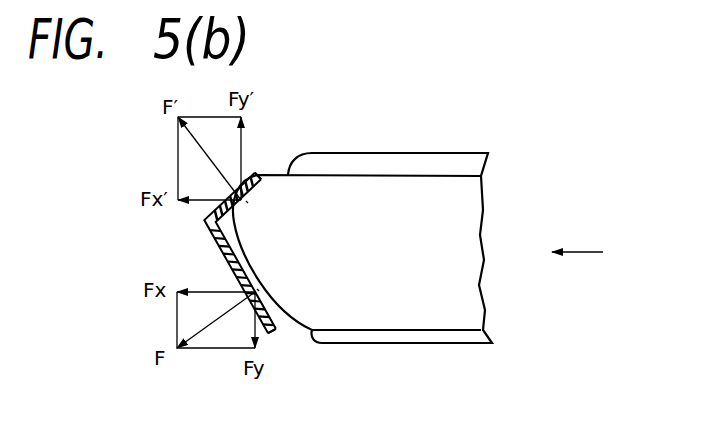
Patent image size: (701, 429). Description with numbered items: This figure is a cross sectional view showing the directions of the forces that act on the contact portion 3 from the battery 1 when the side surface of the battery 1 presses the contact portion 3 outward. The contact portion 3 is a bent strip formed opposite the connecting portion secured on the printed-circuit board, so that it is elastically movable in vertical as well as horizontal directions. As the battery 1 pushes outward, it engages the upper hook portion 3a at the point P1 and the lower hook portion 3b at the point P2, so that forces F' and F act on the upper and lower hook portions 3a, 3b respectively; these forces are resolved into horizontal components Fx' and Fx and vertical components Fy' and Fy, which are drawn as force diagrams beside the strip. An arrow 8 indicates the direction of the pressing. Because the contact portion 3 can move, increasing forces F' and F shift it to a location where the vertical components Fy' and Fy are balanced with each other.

The battery 1 is at (437, 187).
The contact portion 3 is at (206, 222).
The upper hook portion 3a is at (259, 172).
The lower hook portion 3b is at (275, 332).
The direction of force / movement arrow 8 is at (580, 252).
The point P1 is at (247, 202).
The point P2 is at (258, 290).